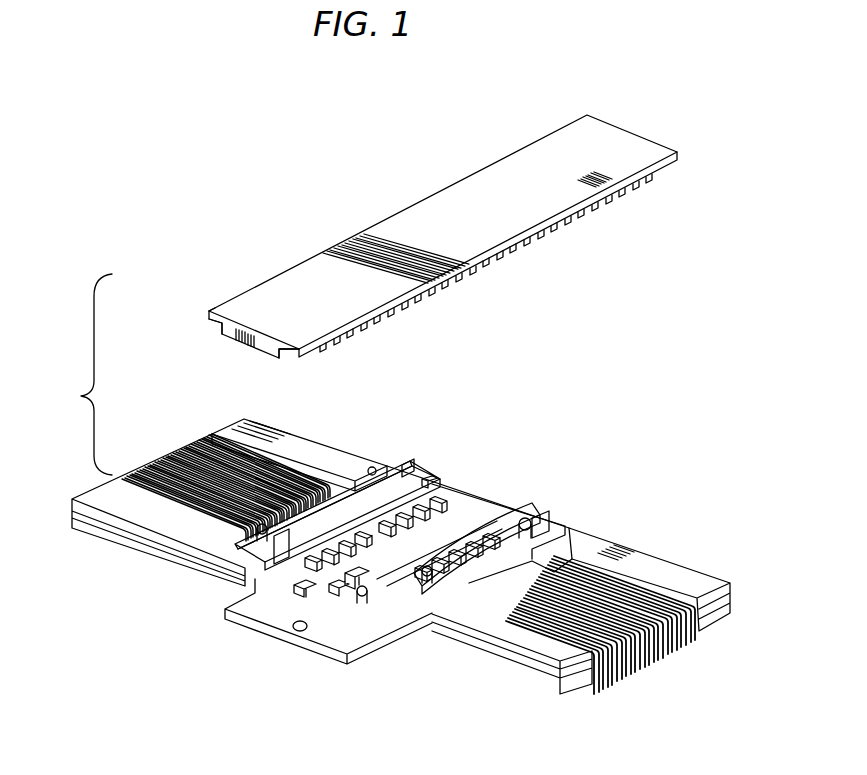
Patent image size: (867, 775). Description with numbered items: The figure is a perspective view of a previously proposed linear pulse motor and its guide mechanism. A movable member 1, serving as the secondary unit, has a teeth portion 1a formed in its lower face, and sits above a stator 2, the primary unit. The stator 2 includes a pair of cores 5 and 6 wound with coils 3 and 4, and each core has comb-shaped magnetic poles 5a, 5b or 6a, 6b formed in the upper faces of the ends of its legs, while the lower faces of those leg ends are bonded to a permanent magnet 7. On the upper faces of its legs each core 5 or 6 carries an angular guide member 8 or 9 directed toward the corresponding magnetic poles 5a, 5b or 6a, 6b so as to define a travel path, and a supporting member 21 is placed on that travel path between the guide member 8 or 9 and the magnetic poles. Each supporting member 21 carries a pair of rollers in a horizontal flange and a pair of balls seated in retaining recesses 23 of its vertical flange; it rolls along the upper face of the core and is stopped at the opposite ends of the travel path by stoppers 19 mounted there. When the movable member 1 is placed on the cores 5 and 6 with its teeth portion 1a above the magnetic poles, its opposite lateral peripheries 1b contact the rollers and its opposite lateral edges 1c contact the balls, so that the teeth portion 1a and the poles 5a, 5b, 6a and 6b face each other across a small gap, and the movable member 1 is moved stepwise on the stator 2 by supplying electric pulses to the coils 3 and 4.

The movable member 1 is at (432, 214).
The teeth portion 1a is at (241, 342).
The lateral peripheries 1b is at (213, 323).
The lateral edges 1c is at (207, 311).
The stator 2 is at (166, 563).
The coil 3 is at (625, 673).
The coil 4 is at (175, 467).
The core 5 is at (685, 577).
The magnetic pole 5a is at (478, 507).
The magnetic pole 5b is at (348, 582).
The core 6 is at (298, 446).
The magnetic pole 6a is at (423, 472).
The magnetic pole 6b is at (250, 607).
The permanent magnet 7 is at (303, 600).
The guide member 8 is at (387, 583).
The guide member 9 is at (362, 493).
The stopper 19 is at (425, 477).
The supporting member 21 is at (348, 527).
The retaining recess 23 is at (408, 468).